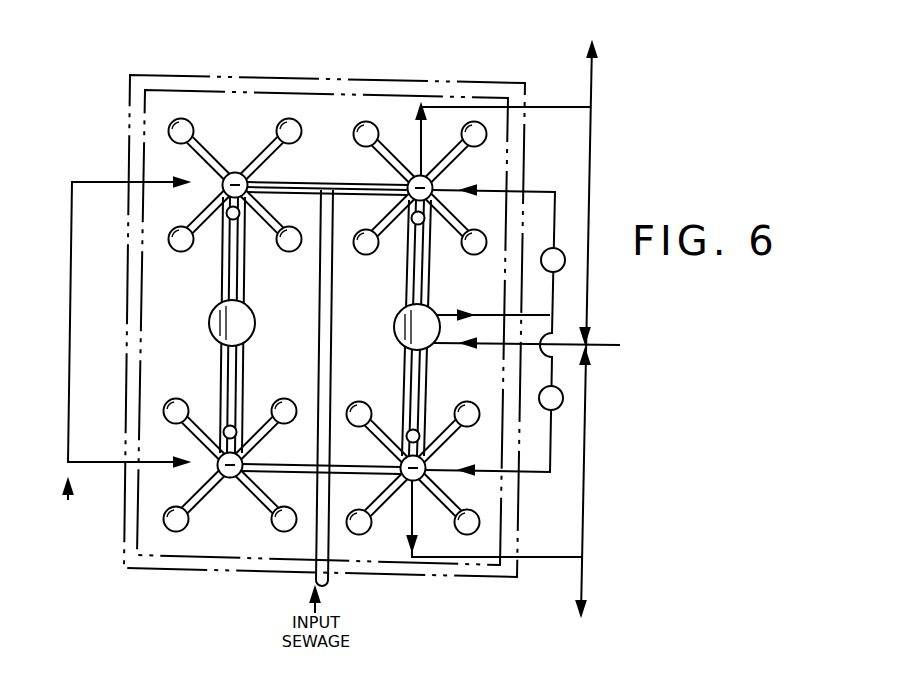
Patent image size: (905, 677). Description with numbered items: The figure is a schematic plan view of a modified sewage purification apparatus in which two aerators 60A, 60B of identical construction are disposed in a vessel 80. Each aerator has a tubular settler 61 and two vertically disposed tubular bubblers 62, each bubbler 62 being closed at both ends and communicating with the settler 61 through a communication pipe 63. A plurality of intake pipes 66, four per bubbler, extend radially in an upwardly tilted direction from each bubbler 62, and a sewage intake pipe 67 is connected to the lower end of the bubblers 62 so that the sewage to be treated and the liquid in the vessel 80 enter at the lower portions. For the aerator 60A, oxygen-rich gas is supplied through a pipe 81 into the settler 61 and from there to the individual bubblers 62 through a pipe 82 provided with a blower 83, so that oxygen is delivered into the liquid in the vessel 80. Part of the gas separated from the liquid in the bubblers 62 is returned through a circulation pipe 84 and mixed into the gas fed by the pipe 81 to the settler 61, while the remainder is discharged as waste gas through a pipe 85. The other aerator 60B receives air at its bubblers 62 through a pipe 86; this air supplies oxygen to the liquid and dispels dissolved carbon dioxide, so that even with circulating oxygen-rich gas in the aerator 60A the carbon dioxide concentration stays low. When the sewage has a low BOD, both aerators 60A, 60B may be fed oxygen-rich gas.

The aerator 60A is at (412, 99).
The aerator 60B is at (232, 100).
The settler 61 is at (245, 327).
The bubbler 62 is at (238, 172).
The communication pipe 63 is at (222, 382).
The intake pipe 66 is at (180, 249).
The sewage intake pipe 67 is at (323, 181).
The vessel 80 is at (447, 568).
The pipe 81 is at (604, 343).
The pipe 82 is at (489, 313).
The blower 83 is at (562, 252).
The circulation pipe 84 is at (560, 107).
The pipe 85 is at (593, 78).
The pipe 86 is at (70, 258).